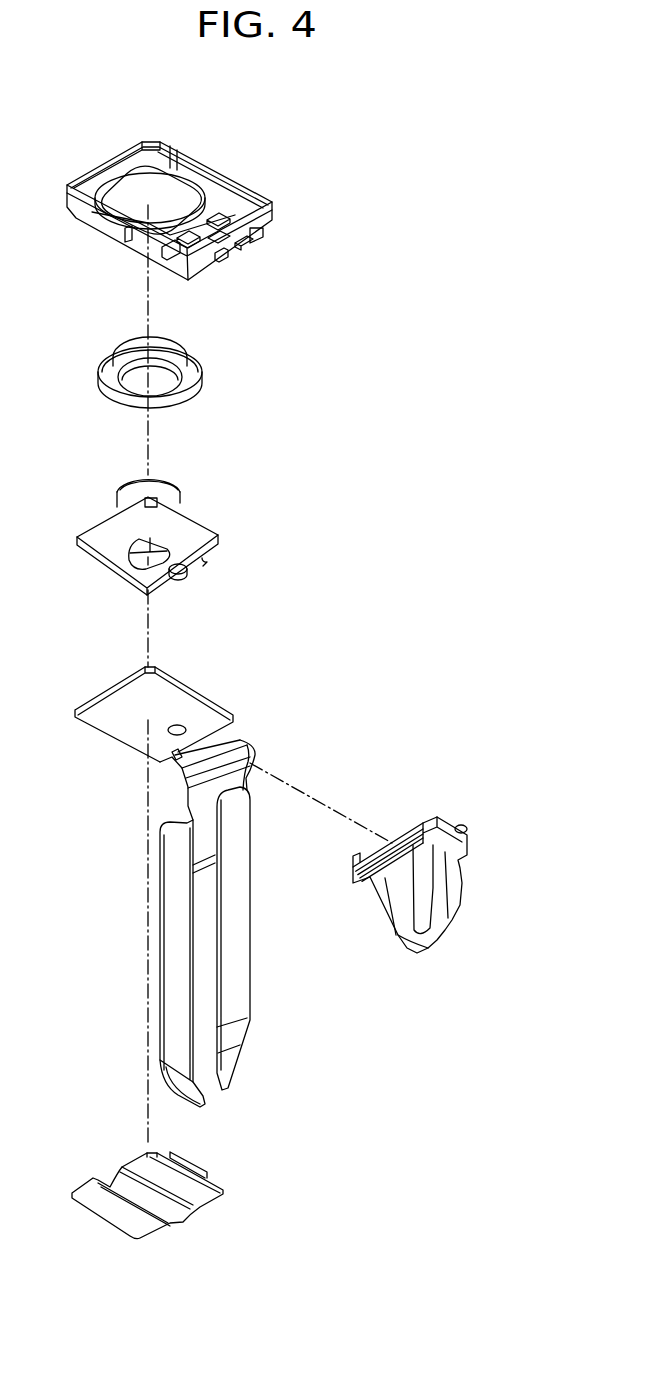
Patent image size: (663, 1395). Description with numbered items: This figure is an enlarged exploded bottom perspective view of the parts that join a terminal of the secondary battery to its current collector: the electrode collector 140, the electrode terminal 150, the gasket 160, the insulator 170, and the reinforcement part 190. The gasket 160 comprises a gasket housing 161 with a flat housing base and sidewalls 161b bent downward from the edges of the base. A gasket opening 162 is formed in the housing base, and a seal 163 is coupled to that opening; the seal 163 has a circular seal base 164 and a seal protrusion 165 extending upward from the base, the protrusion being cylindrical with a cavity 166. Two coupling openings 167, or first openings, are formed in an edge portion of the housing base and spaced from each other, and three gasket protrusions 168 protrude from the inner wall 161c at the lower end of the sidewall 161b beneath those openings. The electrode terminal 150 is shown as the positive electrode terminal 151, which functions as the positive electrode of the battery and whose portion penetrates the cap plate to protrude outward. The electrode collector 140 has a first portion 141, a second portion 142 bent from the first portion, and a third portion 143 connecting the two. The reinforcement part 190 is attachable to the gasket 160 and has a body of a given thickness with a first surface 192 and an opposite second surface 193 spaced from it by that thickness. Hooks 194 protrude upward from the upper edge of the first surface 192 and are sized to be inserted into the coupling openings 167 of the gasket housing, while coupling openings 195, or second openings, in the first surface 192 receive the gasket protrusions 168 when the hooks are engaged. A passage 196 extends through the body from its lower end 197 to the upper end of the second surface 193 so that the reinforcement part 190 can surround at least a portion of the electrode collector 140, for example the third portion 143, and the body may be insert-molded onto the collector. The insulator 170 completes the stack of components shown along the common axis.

The electrode collector 140 is at (258, 702).
The first portion 141 is at (208, 698).
The second portion 142 is at (240, 972).
The third portion 143 is at (250, 740).
The electrode terminal 150 is at (236, 541).
The positive electrode terminal 151 is at (170, 497).
The gasket 160 is at (418, 263).
The gasket housing 161 is at (277, 237).
The sidewall 161b is at (237, 192).
The inner wall 161c is at (253, 243).
The gasket opening 162 is at (171, 206).
The seal 163 is at (272, 373).
The seal base 164 is at (175, 403).
The seal protrusion 165 is at (118, 346).
The cavity 166 is at (138, 382).
The coupling opening 167 is at (189, 258).
The gasket protrusion 168 is at (221, 258).
The insulator 170 is at (207, 1190).
The reinforcement part 190 is at (483, 834).
The first surface 192 is at (460, 885).
The second surface 193 is at (398, 905).
The hook 194 is at (463, 826).
The coupling opening 195 is at (417, 837).
The passage 196 is at (447, 927).
The lower end 197 is at (417, 953).